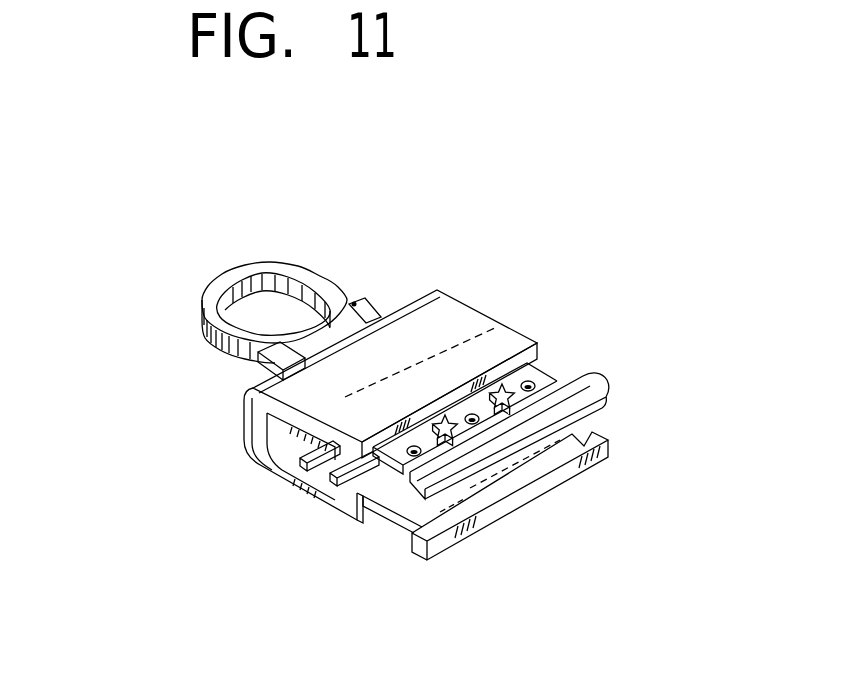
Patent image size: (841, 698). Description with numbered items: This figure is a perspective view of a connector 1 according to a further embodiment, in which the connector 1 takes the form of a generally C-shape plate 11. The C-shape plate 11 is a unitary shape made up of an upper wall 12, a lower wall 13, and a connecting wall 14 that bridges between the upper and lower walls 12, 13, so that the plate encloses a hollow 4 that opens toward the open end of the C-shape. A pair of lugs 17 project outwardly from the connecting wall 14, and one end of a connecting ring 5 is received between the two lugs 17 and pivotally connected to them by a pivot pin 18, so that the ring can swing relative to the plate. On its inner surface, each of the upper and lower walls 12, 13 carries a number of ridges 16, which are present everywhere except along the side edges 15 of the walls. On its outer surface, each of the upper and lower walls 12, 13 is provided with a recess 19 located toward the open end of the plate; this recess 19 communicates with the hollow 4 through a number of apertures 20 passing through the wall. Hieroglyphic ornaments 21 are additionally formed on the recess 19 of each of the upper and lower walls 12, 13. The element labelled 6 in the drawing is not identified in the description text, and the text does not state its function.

The connector 1 is at (230, 262).
The hollow 4 is at (497, 490).
The connecting ring 5 is at (303, 266).
The side bar 6 is at (610, 450).
The C-shape plate 11 is at (457, 330).
The upper wall 12 is at (268, 449).
The lower wall 13 is at (489, 522).
The connecting wall 14 is at (249, 424).
The side edges 15 is at (268, 477).
The ridges 16 is at (322, 495).
The lugs 17 is at (364, 300).
The pivot pin 18 is at (260, 374).
The recess 19 is at (347, 503).
The apertures 20 is at (540, 368).
The hieroglyphic ornaments 21 is at (598, 400).